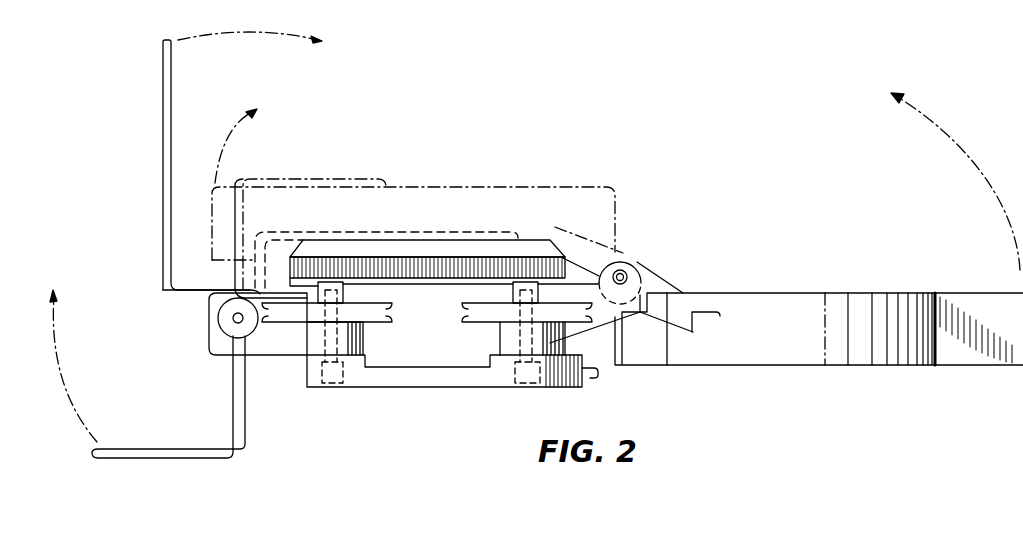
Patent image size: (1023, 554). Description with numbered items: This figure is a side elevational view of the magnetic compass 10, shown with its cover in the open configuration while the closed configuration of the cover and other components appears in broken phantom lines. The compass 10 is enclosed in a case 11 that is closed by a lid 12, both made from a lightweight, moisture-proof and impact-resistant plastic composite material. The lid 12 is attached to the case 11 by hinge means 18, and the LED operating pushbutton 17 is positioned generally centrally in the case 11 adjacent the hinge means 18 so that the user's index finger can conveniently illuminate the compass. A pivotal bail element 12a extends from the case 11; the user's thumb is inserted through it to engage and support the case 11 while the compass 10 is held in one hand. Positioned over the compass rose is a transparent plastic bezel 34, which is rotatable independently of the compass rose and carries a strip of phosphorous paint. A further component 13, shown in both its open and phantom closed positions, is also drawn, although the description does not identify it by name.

The magnetic compass 10 is at (624, 173).
The case 11 is at (442, 367).
The lid 12 is at (825, 293).
The pivotal bail element 12a is at (357, 172).
The platen 13 is at (163, 97).
The LED operating pushbutton 17 is at (598, 378).
The hinge means 18 is at (626, 271).
The transparent plastic bezel 34 is at (536, 237).